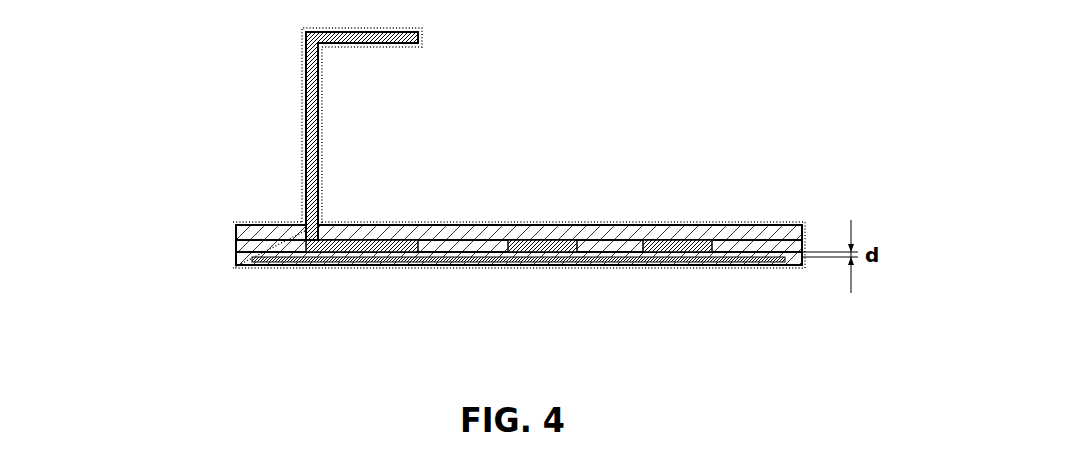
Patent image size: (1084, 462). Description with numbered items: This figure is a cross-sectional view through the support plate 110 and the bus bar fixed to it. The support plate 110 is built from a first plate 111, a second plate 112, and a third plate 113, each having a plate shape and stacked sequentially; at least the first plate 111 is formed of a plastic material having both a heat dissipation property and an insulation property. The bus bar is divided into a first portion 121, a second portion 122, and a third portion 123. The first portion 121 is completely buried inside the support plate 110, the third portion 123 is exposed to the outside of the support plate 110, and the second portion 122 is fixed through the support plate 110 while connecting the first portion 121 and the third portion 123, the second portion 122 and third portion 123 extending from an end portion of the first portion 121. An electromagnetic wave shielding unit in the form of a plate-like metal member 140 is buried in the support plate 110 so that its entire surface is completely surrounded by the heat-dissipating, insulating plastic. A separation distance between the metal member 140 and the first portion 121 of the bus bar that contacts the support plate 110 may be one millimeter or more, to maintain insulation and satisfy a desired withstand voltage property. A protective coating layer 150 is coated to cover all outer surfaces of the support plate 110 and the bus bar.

The support plate 110 is at (486, 193).
The first plate 111 is at (242, 260).
The second plate 112 is at (607, 245).
The third plate 113 is at (502, 230).
The first portion 121 is at (390, 246).
The second portion 122 is at (320, 232).
The third portion 123 is at (372, 142).
The metal member 140 is at (757, 265).
The protective coating layer 150 is at (695, 223).